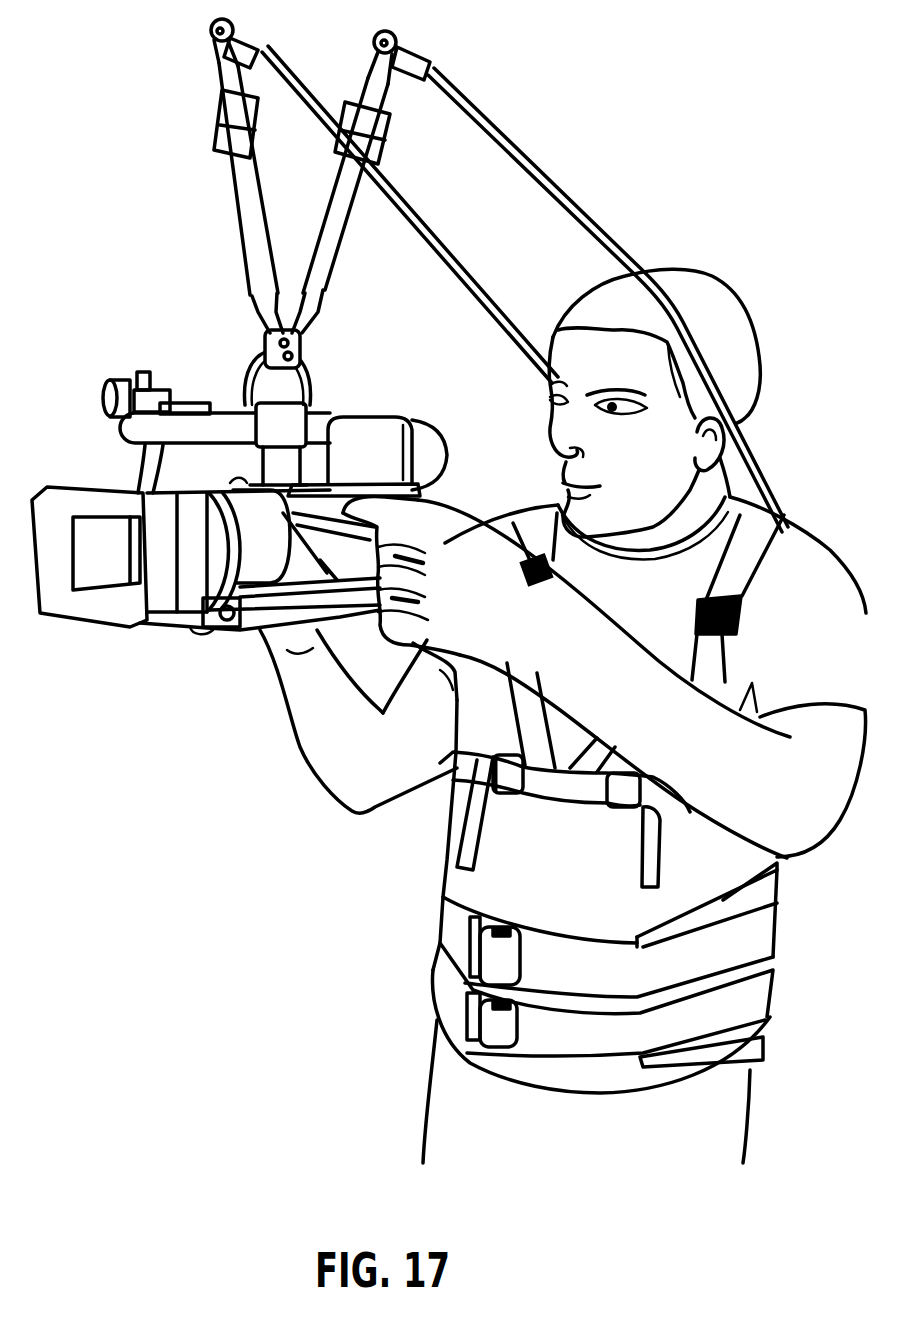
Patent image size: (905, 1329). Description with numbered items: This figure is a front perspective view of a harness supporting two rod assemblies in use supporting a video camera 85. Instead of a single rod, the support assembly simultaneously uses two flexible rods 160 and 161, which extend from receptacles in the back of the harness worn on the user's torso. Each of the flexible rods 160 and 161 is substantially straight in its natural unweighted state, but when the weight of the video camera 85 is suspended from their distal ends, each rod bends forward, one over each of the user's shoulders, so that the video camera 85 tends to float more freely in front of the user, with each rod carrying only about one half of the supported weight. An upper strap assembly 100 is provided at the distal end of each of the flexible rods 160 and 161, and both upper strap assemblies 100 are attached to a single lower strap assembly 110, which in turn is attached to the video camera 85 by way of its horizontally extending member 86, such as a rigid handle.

The video camera 85 is at (383, 413).
The horizontally extending member 86 is at (216, 435).
The upper strap assembly 100 is at (243, 233).
The lower strap assembly 110 is at (250, 377).
The flexible rod 160 is at (567, 197).
The flexible rod 161 is at (437, 233).